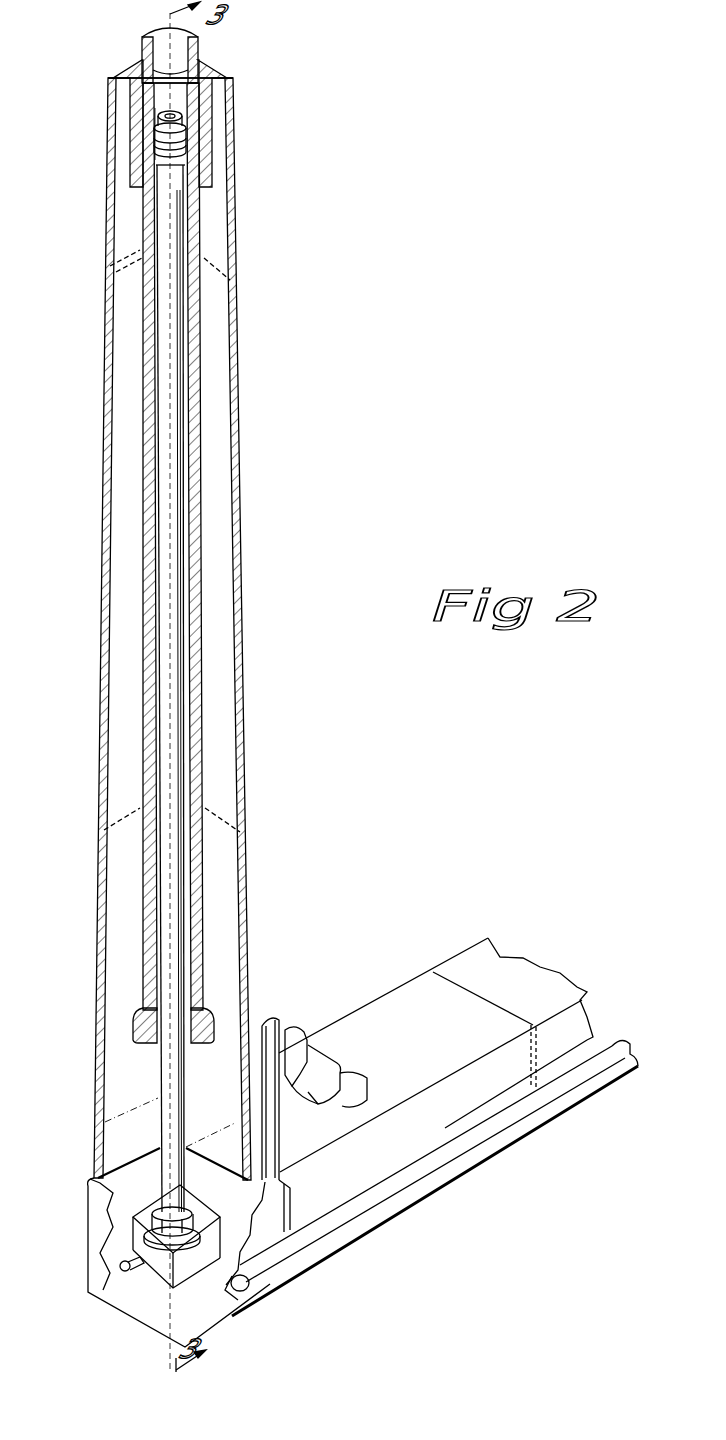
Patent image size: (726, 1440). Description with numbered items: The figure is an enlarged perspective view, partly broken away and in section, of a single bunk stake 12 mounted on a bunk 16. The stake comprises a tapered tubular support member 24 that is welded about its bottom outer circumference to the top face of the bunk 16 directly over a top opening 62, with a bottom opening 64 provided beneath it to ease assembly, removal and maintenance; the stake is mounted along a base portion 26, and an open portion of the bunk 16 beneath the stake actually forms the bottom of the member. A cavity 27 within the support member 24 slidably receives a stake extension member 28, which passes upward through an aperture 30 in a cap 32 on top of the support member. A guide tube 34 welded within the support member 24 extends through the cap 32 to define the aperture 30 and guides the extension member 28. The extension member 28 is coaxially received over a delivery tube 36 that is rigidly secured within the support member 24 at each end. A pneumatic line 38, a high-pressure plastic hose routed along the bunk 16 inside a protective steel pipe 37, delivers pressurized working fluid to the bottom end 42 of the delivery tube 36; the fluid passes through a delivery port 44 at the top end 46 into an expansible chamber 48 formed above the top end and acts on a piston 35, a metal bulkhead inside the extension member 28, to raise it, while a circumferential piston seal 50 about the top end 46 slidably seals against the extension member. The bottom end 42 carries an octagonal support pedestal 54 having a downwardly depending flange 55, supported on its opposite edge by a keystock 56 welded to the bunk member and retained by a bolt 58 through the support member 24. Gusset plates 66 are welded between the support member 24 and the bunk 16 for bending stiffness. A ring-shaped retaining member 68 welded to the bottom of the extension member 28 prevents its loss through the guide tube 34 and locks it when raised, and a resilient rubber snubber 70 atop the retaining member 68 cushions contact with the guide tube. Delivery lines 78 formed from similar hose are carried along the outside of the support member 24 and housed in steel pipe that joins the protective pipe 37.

The bunk stake 12 is at (368, 386).
The bunk 16 is at (560, 1042).
The tubular support member 24 is at (247, 648).
The base portion 26 is at (76, 1158).
The cavity 27 is at (120, 868).
The stake extension member 28 is at (143, 605).
The aperture 30 is at (178, 106).
The cap 32 is at (143, 66).
The guide tube 34 is at (205, 153).
The piston 35 is at (165, 90).
The delivery tube 36 is at (208, 1185).
The protective steel pipe 37 is at (445, 1150).
The pneumatic line 38 is at (160, 1292).
The bottom end of delivery tube 42 is at (145, 1178).
The delivery port 44 is at (176, 100).
The top end of delivery tube 46 is at (148, 106).
The expansible chamber 48 is at (160, 28).
The circumferential piston seal 50 is at (170, 175).
The support pedestal 54 is at (150, 1224).
The downwardly depending flange 55 is at (150, 1242).
The keystock 56 is at (285, 1192).
The bolt 58 is at (120, 1267).
The top opening 62 is at (280, 1128).
The bottom opening 64 is at (105, 1315).
The gusset plate 66 is at (292, 1025).
The ring-shaped retaining member 68 is at (135, 1030).
The snubber 70 is at (205, 1016).
The delivery line 78 is at (248, 1292).